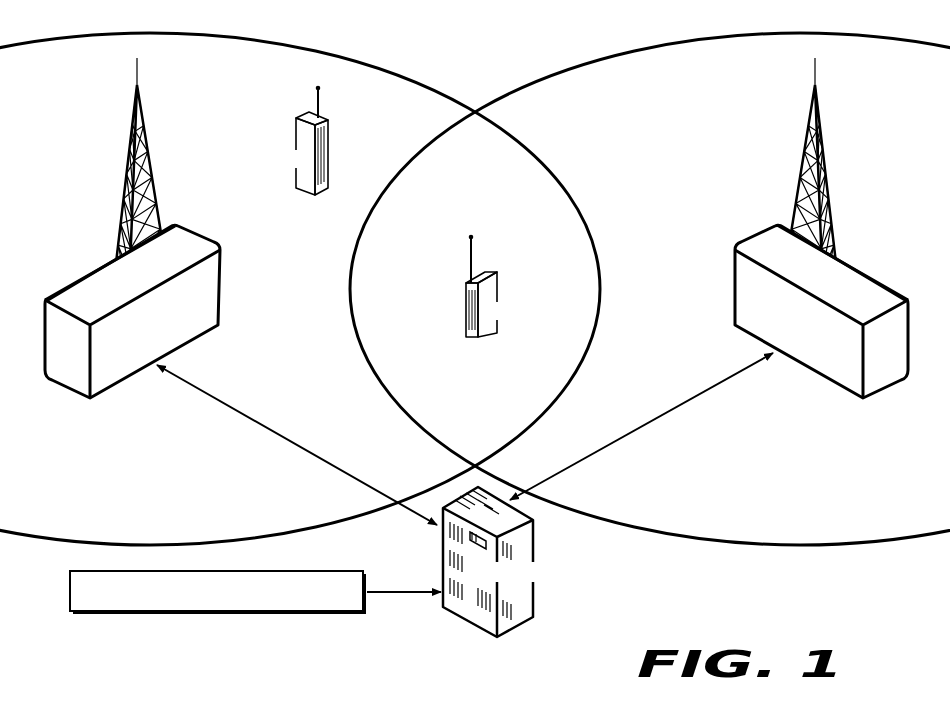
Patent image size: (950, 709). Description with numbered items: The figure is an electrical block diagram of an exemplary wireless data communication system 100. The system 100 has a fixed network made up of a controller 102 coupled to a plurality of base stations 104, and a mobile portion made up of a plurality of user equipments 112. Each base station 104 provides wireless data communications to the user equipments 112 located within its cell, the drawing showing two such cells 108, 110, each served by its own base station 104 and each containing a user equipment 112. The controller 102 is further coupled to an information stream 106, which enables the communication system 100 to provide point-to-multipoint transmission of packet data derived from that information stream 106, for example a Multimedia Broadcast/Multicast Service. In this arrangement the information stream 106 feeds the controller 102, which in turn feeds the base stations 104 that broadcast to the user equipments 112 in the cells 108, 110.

The wireless data communication system 100 is at (475, 345).
The controller 102 is at (533, 612).
The base station 104 is at (220, 290).
The information stream 106 is at (218, 614).
The cell 108 is at (814, 518).
The cell 110 is at (174, 518).
The user equipment (UE) 112 is at (330, 157).